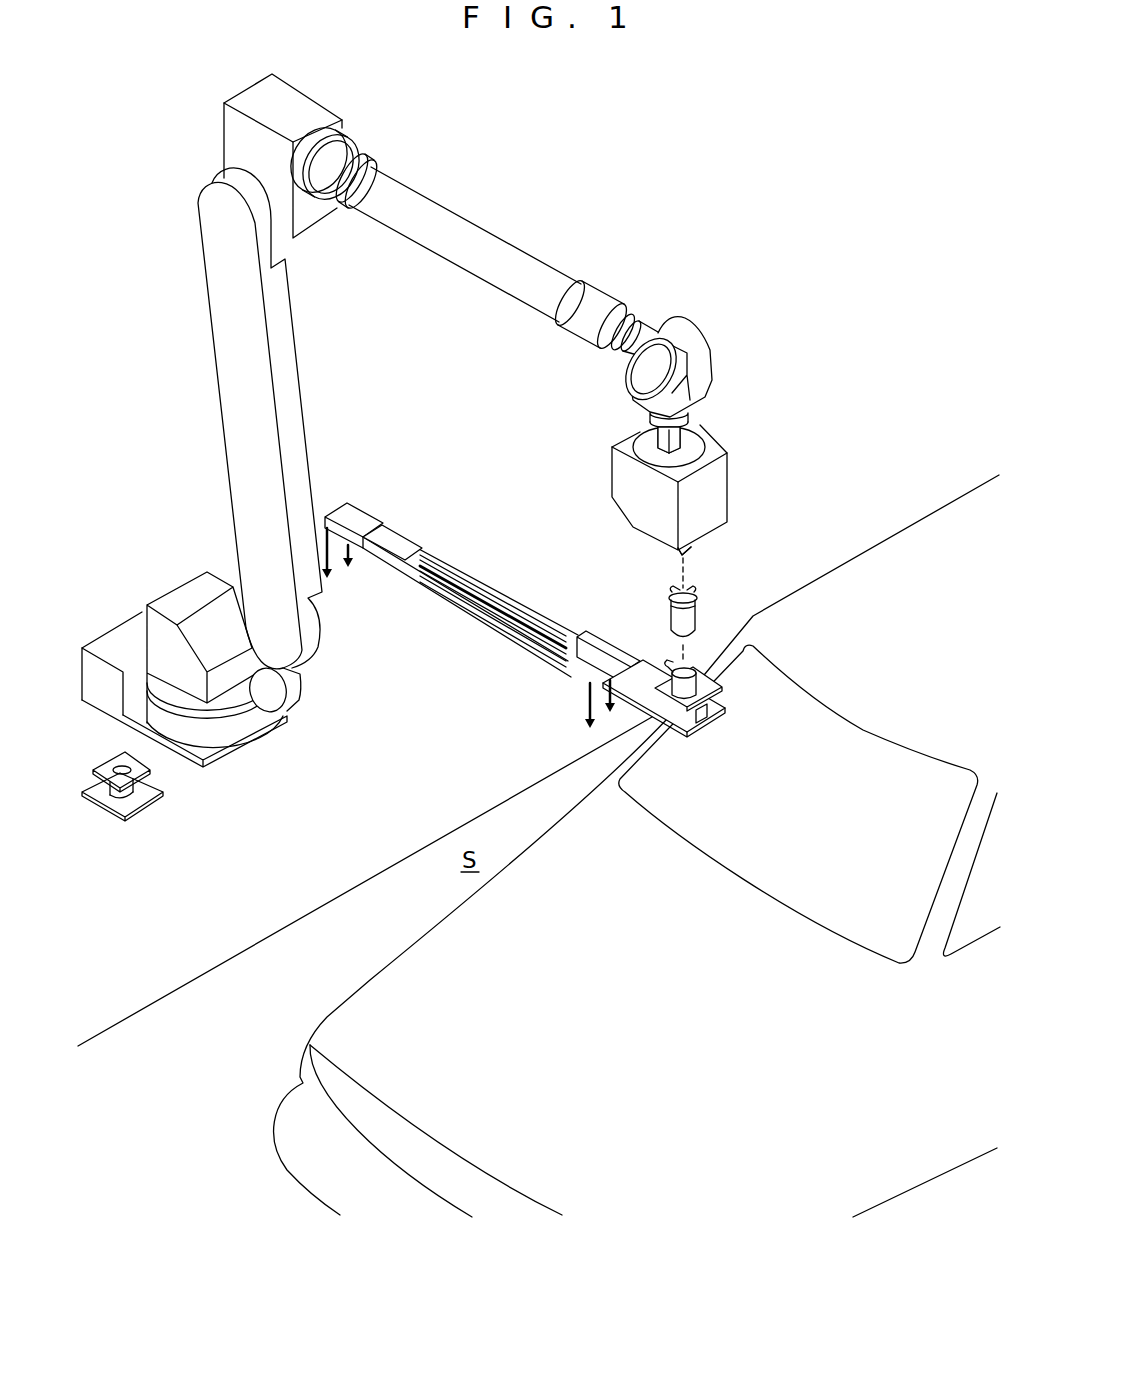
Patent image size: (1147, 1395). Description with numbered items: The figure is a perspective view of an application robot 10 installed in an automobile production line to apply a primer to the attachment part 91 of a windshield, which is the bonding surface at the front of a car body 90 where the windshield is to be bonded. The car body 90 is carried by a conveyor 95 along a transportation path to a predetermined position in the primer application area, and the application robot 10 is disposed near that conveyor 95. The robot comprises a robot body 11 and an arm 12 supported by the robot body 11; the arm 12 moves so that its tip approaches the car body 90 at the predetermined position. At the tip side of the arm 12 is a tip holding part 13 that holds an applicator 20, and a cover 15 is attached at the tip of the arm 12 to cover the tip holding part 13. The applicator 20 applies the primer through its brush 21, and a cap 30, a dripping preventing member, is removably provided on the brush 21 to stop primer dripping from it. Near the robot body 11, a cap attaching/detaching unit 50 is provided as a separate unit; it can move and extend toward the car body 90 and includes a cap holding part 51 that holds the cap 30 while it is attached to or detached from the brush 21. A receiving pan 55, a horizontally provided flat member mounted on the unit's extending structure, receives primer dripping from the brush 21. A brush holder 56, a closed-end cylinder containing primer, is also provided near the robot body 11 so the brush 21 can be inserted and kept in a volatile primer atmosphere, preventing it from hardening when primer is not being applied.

The application robot 10 is at (181, 158).
The robot body 11 is at (125, 632).
The arm 12 is at (228, 405).
The tip holding part 13 is at (680, 437).
The cover 15 is at (612, 473).
The applicator 20 is at (684, 551).
The brush 21 is at (688, 548).
The cap 30 is at (693, 615).
The cap attaching/detaching unit 50 is at (576, 629).
The cap holding part 51 is at (681, 695).
The receiving pan 55 is at (640, 695).
The brush holder 56 is at (121, 817).
The car body 90 is at (915, 532).
The attachment part of the windshield 91 is at (753, 899).
The conveyor 95 is at (267, 958).